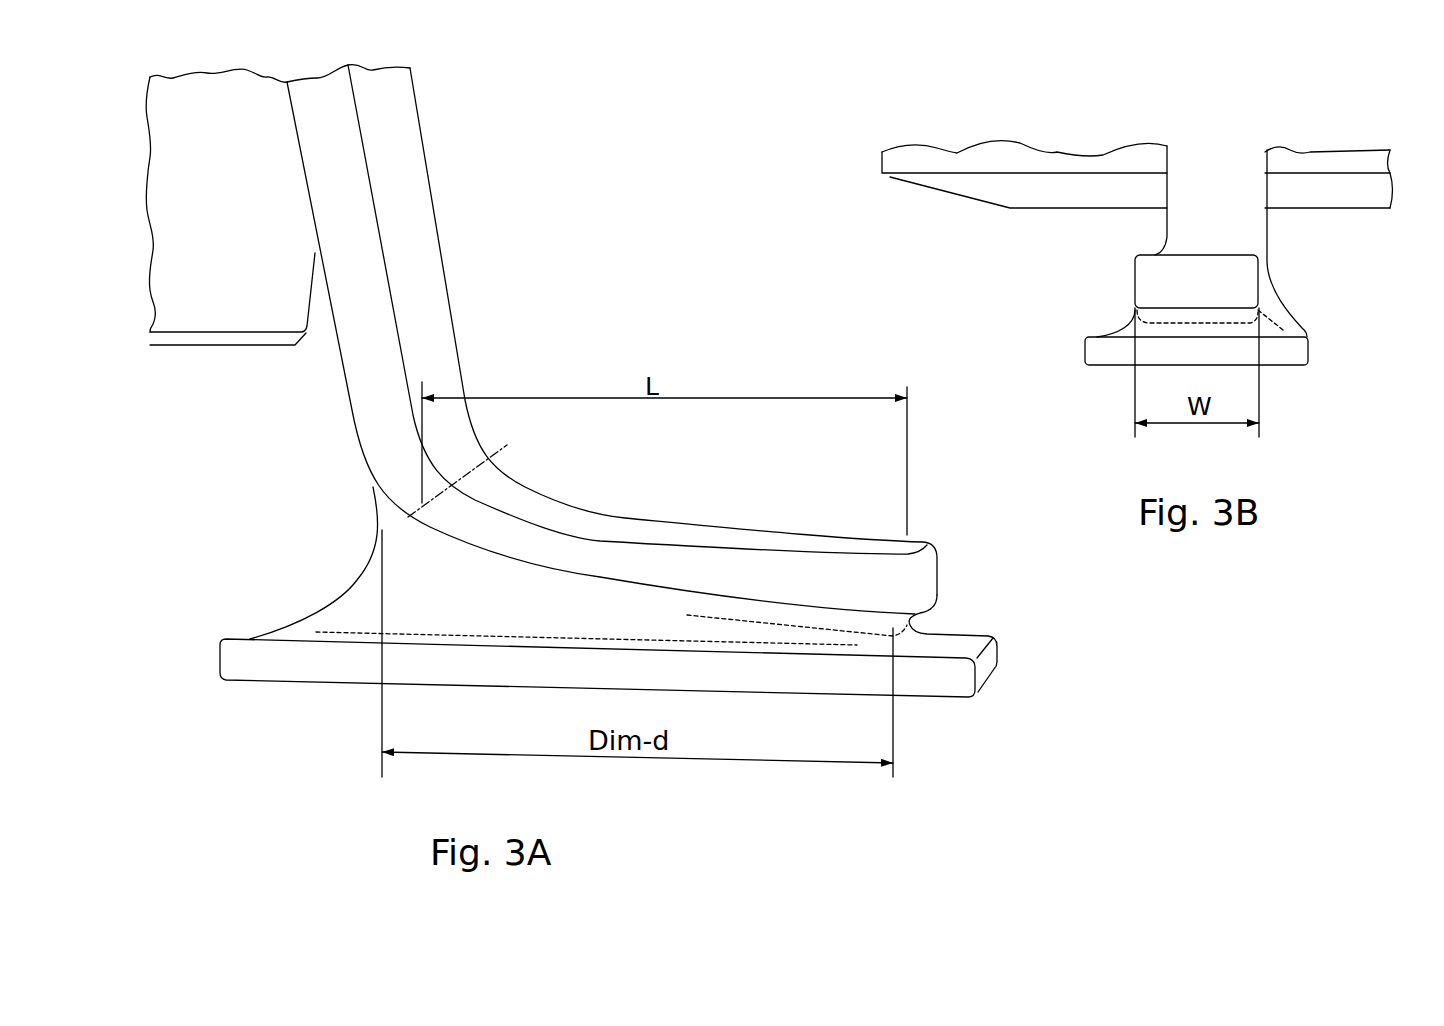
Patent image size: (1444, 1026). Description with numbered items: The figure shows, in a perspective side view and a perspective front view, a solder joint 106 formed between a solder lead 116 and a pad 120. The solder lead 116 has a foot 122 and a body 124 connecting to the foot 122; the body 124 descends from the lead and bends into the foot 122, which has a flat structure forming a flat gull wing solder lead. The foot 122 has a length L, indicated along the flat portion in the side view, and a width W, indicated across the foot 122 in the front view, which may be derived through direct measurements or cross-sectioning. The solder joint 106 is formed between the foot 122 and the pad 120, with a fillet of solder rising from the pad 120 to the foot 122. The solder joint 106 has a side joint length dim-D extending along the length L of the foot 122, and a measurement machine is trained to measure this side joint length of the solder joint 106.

In FIG. 3A, the solder joint 106 is at (360, 605).
In FIG. 3B, the solder joint 106 is at (1185, 318).
In FIG. 3A, the solder lead 116 is at (352, 328).
In FIG. 3A, the pad 120 is at (955, 690).
In FIG. 3B, the pad 120 is at (1097, 352).
In FIG. 3A, the foot 122 is at (697, 557).
In FIG. 3B, the foot 122 is at (1238, 283).
In FIG. 3A, the body 124 is at (420, 190).
In FIG. 3B, the body 124 is at (1243, 202).